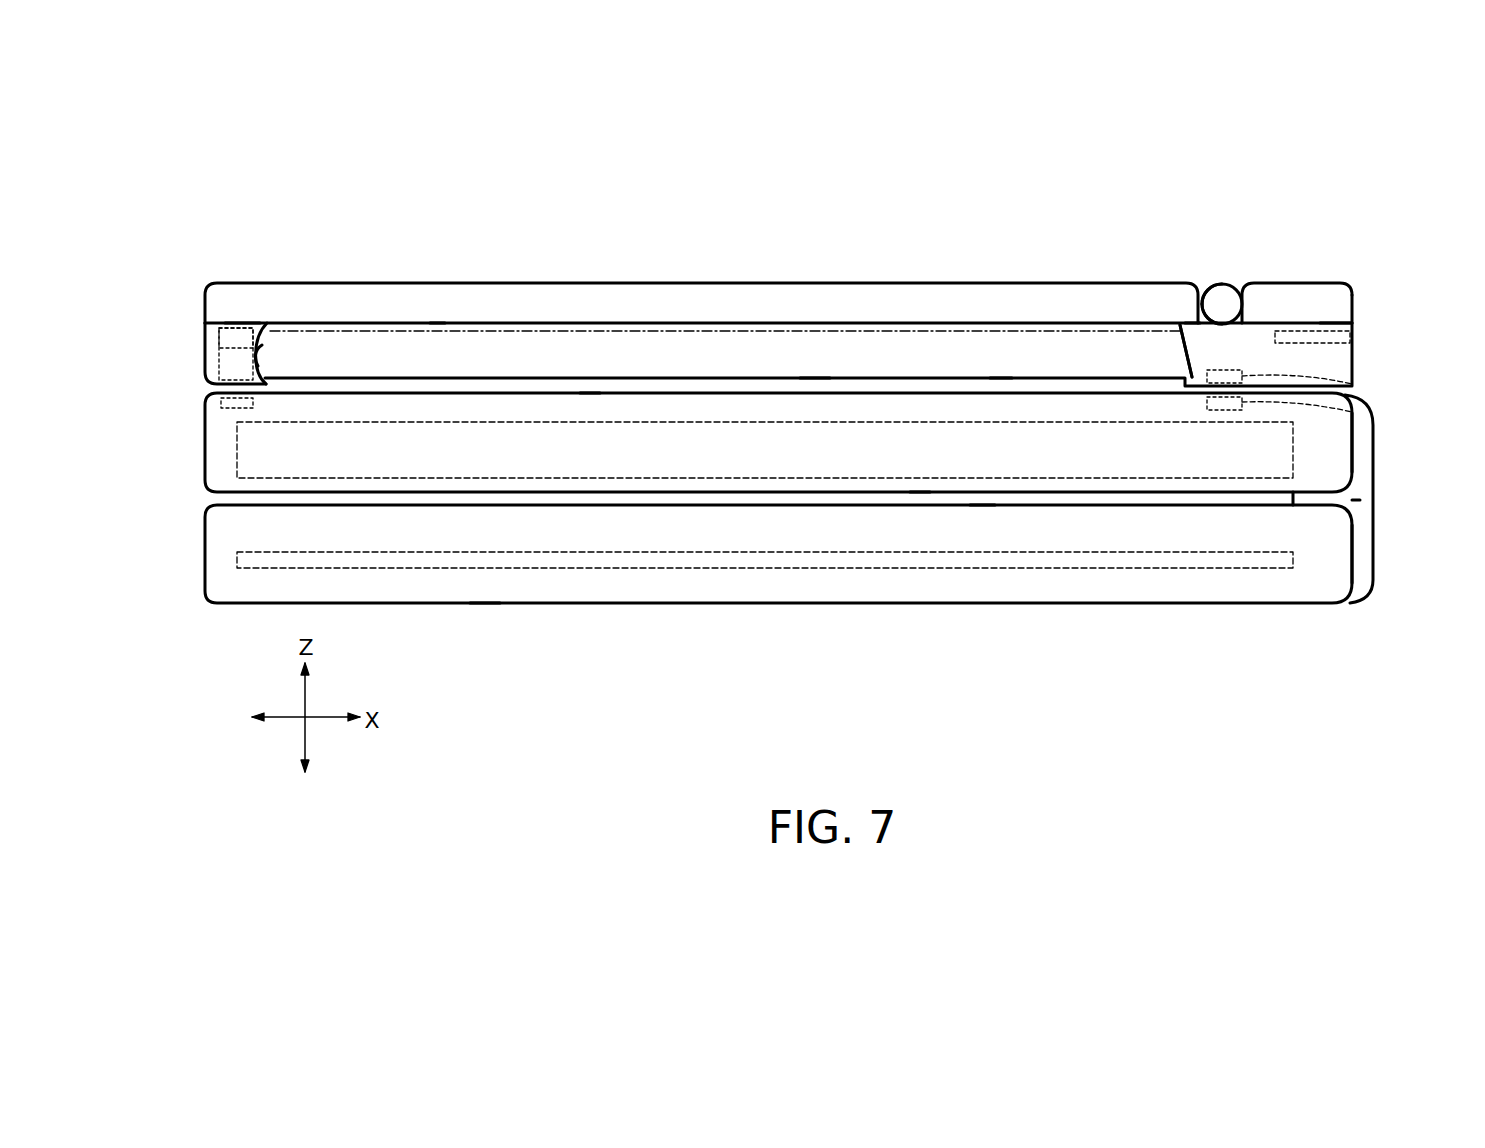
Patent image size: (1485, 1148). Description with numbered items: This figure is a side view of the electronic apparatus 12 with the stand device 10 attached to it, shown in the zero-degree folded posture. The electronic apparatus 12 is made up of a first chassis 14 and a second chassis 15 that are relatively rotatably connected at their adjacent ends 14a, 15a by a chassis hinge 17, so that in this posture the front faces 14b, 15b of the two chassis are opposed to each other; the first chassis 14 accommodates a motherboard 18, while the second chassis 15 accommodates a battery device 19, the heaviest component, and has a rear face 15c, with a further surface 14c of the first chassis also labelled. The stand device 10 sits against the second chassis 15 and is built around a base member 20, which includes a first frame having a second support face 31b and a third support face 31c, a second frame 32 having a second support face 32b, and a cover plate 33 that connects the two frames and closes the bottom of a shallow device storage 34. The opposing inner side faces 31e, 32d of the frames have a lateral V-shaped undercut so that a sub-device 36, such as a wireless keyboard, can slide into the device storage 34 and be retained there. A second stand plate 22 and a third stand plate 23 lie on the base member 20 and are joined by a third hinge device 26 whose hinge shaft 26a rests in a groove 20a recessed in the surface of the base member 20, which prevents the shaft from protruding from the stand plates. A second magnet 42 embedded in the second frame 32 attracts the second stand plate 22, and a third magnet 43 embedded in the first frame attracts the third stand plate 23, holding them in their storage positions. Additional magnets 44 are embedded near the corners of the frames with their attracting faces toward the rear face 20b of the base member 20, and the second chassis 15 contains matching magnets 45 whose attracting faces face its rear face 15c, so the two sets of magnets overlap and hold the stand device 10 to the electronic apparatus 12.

The stand device 10 is at (740, 247).
The electronic apparatus 12 is at (734, 651).
The first chassis 14 is at (841, 614).
The end of first chassis 14a is at (1352, 553).
The front face of first chassis 14b is at (977, 497).
The first housing bottom 14c is at (484, 605).
The second chassis 15 is at (630, 503).
The end of second chassis 15a is at (1352, 442).
The front face of second chassis 15b is at (920, 494).
The rear face of second chassis 15c is at (590, 391).
The chassis hinge 17 is at (1356, 500).
The motherboard 18 is at (1043, 570).
The battery device 19 is at (1160, 452).
The base member 20 is at (1366, 356).
The groove 20a is at (1222, 284).
The rear face of base member 20b is at (793, 393).
The second stand plate 22 is at (524, 277).
The third stand plate 23 is at (1316, 272).
The third hinge device 26 is at (1230, 266).
The hinge shaft 26a is at (1232, 300).
The second support face 31b is at (1192, 322).
The third support face 31c is at (1328, 325).
The inner side face of first frame 31e is at (1182, 354).
The second frame 32 is at (208, 350).
The second support face 32b is at (242, 321).
The inner side face of second frame 32d is at (268, 348).
The cover plate 33 is at (1000, 391).
The device storage 34 is at (880, 348).
The sub-device 36 is at (437, 321).
The second magnet 42 is at (212, 342).
The third magnet 43 is at (1357, 330).
The magnets 44 is at (1352, 384).
The magnets 45 is at (218, 401).